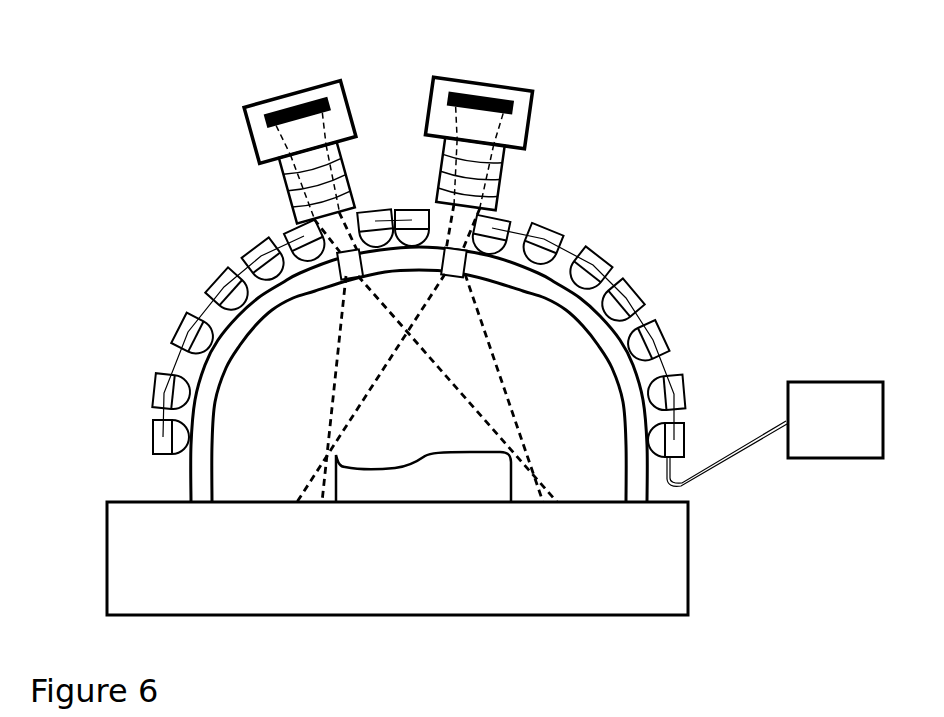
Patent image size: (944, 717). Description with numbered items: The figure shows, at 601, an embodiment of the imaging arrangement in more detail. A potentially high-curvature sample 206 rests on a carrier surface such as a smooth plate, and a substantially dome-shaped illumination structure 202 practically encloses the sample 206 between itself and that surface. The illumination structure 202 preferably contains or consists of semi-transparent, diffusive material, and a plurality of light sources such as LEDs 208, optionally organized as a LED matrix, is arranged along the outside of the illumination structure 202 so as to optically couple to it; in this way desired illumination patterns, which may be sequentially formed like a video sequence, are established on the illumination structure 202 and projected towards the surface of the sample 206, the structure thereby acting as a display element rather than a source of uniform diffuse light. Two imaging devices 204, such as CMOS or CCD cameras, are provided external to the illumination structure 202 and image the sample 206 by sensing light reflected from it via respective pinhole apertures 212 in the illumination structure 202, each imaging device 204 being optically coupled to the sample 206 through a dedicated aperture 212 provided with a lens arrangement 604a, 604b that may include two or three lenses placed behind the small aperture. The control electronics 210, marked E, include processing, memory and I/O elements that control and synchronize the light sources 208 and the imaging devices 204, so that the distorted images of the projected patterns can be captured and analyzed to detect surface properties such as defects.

The embodiment of the arrangement 601 is at (95, 88).
The illumination structure 202 is at (187, 472).
The imaging devices 204 is at (445, 77).
The sample 206 is at (433, 455).
The LEDs 208 is at (251, 246).
The control electronics 210 is at (834, 383).
The pinhole apertures 212 is at (446, 244).
The lens arrangement 604a is at (292, 183).
The lens arrangement 604b is at (499, 174).